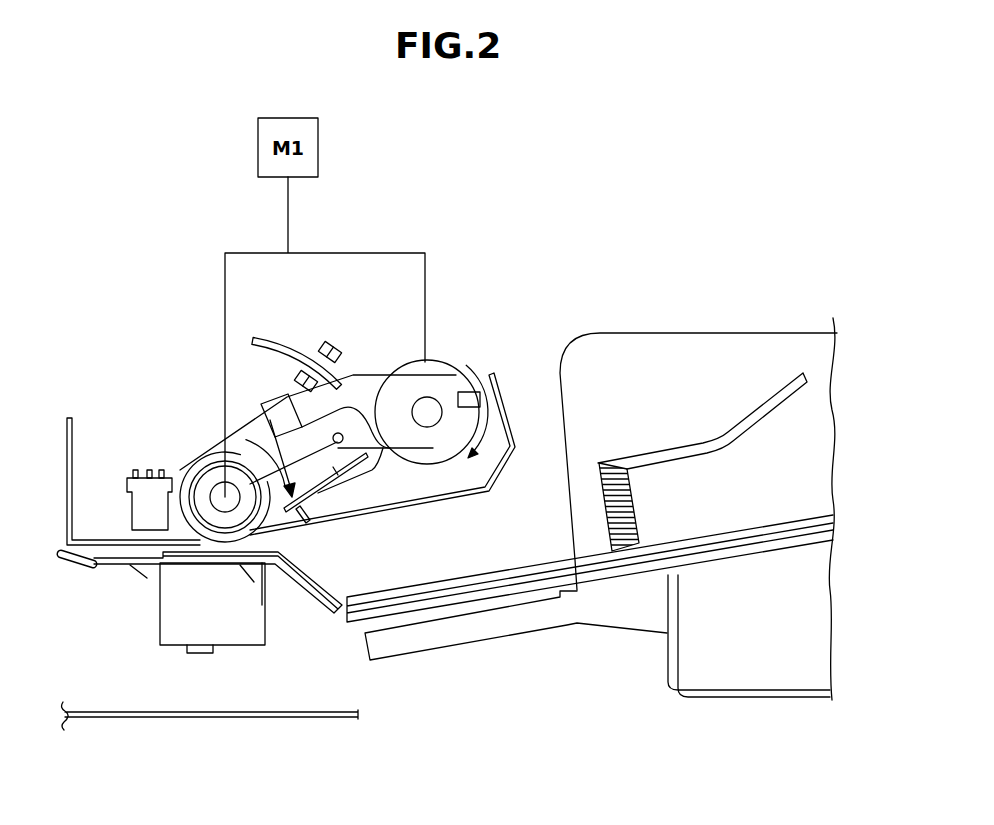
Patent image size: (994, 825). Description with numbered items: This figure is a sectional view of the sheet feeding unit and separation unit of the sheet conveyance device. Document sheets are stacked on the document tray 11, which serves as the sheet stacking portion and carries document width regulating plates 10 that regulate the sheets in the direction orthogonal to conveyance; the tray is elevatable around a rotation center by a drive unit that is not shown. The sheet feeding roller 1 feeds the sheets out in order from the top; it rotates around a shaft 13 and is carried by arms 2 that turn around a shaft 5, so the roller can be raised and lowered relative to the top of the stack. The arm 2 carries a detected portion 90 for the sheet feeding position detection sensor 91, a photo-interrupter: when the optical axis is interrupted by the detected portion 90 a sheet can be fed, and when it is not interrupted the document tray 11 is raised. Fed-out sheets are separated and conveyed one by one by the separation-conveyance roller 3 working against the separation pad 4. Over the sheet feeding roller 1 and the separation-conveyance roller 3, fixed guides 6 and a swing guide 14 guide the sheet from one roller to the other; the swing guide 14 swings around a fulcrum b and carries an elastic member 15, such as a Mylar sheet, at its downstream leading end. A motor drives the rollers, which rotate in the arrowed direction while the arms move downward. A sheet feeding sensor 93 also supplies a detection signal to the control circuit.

The sheet feeding roller 1 is at (458, 368).
The arm 2 is at (369, 378).
The separation-conveyance roller 3 is at (191, 466).
The separation pad 4 is at (175, 627).
The shaft 5 is at (200, 470).
The fixed guide 6 is at (502, 382).
The document width regulating plate 10 is at (716, 348).
The document tray 11 is at (487, 630).
The shaft 13 is at (427, 400).
The swing guide 14 is at (266, 400).
The elastic member 15 is at (307, 535).
The detected portion 90 is at (270, 346).
The sheet feeding position detection sensor 91 is at (332, 342).
The sheet feeding sensor 93 is at (128, 490).
The fulcrum b is at (341, 446).